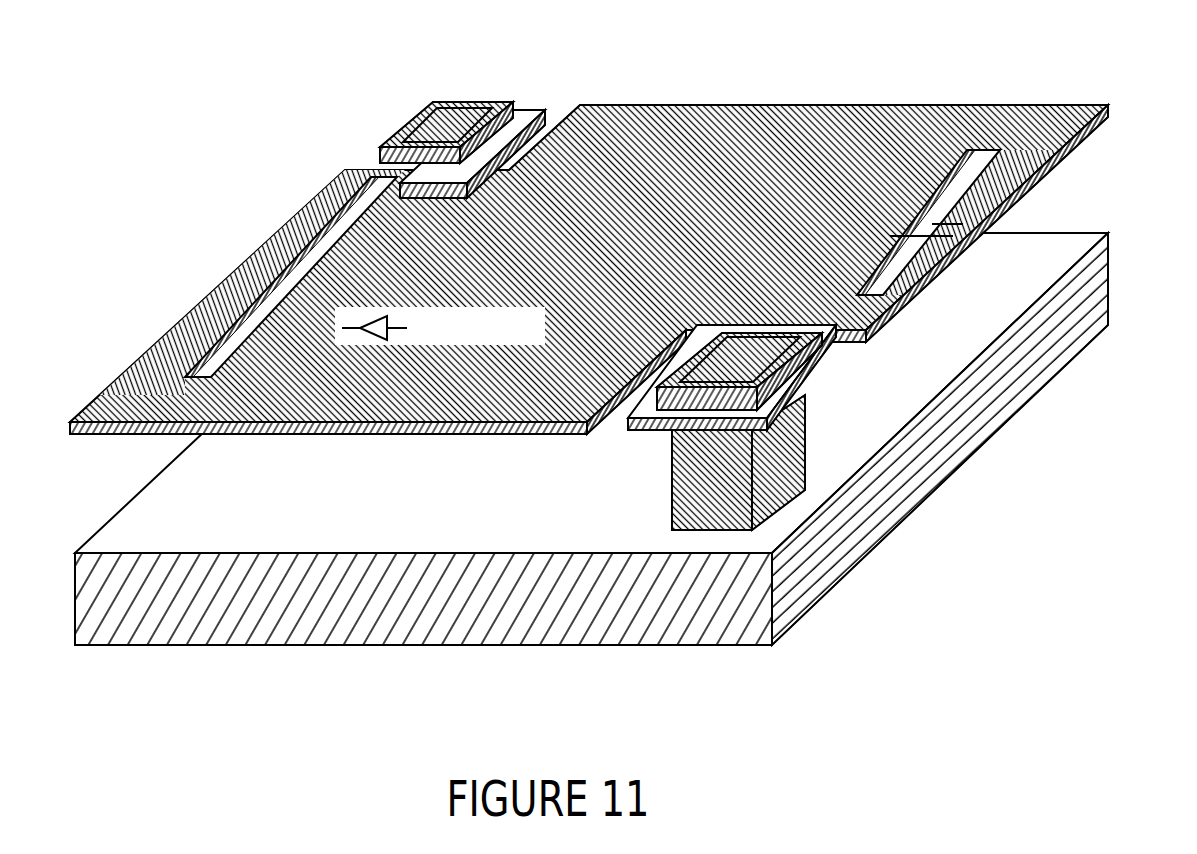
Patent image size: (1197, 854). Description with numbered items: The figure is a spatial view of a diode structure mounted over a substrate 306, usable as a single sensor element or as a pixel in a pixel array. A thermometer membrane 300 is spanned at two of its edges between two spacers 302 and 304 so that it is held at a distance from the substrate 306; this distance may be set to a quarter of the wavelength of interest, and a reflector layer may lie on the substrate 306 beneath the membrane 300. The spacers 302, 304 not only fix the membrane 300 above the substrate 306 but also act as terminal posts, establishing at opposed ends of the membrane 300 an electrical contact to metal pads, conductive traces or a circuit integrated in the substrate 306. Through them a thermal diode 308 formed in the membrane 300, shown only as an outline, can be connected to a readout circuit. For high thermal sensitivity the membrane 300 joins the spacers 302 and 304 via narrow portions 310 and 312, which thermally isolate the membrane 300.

The thermometer membrane 300 is at (790, 104).
The spacer 302 is at (672, 480).
The spacer 304 is at (520, 160).
The substrate 306 is at (815, 603).
The thermal diode 308 is at (407, 328).
The narrow portion 310 is at (1045, 166).
The narrow portion 312 is at (336, 177).